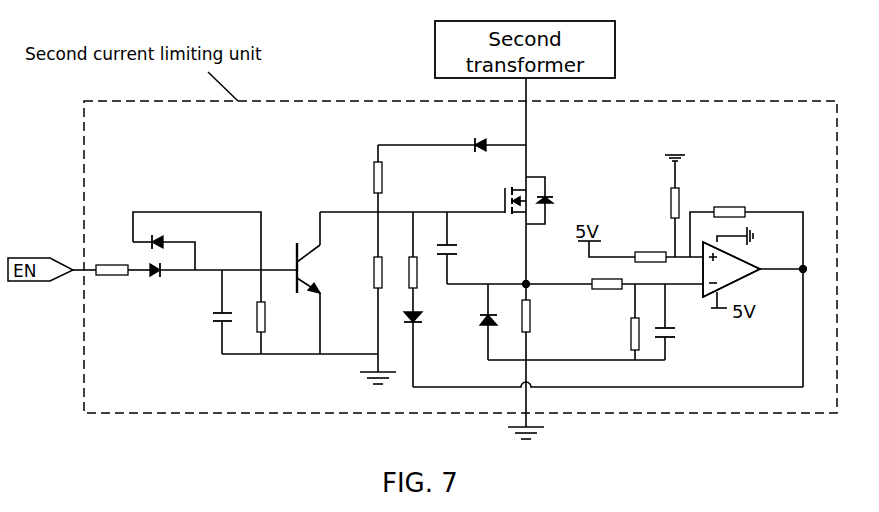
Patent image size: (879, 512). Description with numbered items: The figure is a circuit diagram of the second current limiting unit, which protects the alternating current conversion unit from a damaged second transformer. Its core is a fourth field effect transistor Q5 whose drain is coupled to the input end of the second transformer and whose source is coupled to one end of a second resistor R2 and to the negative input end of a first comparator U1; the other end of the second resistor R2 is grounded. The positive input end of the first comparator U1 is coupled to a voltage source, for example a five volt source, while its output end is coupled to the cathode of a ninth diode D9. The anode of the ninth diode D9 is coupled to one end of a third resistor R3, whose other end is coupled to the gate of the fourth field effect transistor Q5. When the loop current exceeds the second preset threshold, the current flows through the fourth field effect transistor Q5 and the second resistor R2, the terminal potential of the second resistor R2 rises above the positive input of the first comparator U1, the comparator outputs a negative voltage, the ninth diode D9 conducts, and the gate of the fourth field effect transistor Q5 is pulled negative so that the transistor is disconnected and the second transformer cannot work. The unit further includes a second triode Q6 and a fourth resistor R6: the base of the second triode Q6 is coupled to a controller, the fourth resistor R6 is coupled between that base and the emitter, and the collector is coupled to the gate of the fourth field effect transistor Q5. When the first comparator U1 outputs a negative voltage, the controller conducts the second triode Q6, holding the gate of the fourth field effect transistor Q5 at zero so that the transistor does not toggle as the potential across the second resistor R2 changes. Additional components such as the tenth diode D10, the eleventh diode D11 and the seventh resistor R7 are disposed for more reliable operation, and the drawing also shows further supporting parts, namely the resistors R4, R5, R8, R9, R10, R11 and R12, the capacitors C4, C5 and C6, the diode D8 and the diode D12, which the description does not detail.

The seventh resistor R7 is at (112, 282).
The eleventh diode D11 is at (178, 282).
The tenth diode D10 is at (182, 234).
The capacitor C5 is at (208, 319).
The fourth resistor R6 is at (276, 317).
The second triode Q6 is at (318, 268).
The resistor R5 is at (395, 177).
The resistor R4 is at (364, 263).
The third resistor R3 is at (401, 263).
The capacitor C4 is at (461, 250).
The diode D12 is at (480, 132).
The fourth field effect transistor Q5 is at (514, 200).
The ninth diode D9 is at (425, 331).
The diode D8 is at (476, 312).
The second resistor R2 is at (543, 316).
The resistor R9 is at (619, 334).
The capacitor C6 is at (679, 338).
The resistor R8 is at (607, 275).
The resistor R10 is at (647, 247).
The resistor R11 is at (654, 203).
The resistor R12 is at (730, 202).
The first comparator U1 is at (746, 269).